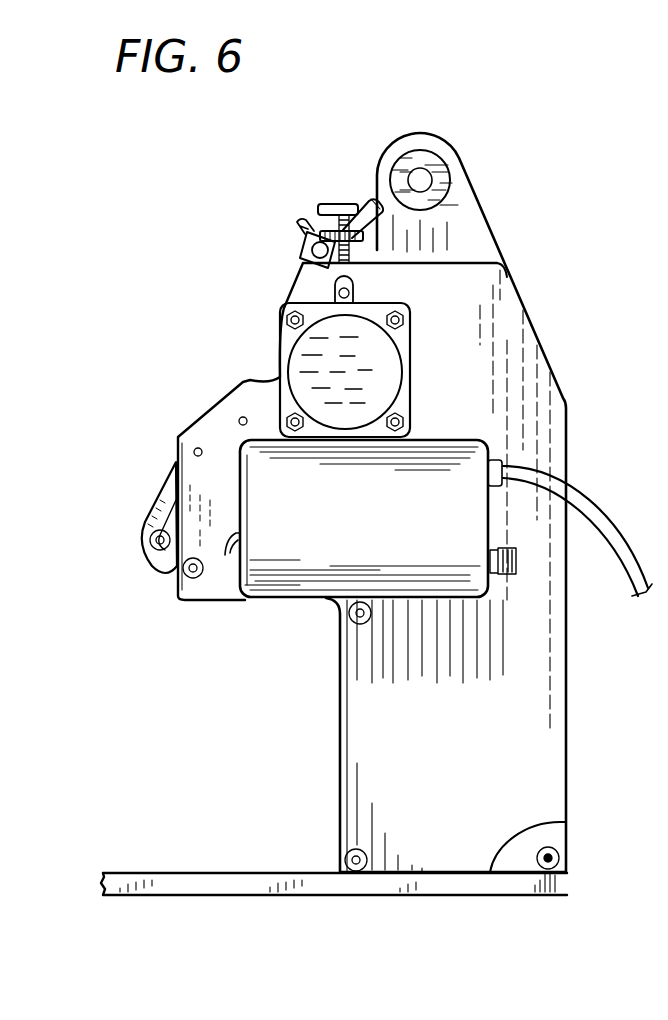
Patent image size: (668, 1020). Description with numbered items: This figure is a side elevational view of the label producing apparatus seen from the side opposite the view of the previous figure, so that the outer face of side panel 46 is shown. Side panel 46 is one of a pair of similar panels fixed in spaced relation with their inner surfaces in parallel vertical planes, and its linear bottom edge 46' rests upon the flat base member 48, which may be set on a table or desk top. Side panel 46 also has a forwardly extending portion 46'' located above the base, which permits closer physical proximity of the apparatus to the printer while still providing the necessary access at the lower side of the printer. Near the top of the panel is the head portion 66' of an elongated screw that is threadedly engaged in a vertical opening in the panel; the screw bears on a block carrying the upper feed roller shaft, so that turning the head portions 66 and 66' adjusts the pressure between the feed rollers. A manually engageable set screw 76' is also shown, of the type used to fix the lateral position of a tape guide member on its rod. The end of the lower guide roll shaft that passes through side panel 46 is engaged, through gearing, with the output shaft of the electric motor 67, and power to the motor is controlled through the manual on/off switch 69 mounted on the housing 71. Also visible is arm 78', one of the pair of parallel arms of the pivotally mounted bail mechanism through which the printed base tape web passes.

The side panel 46 is at (489, 502).
The linear bottom edge 46' is at (559, 852).
The forwardly extending portion 46'' is at (109, 536).
The base member 48 is at (206, 878).
The head portion 66 is at (335, 201).
The head portion 66' is at (462, 198).
The electric motor 67 is at (300, 353).
The on/off switch 69 is at (222, 552).
The housing 71 is at (297, 580).
The set screw 76' is at (267, 237).
The arm 78' is at (273, 431).